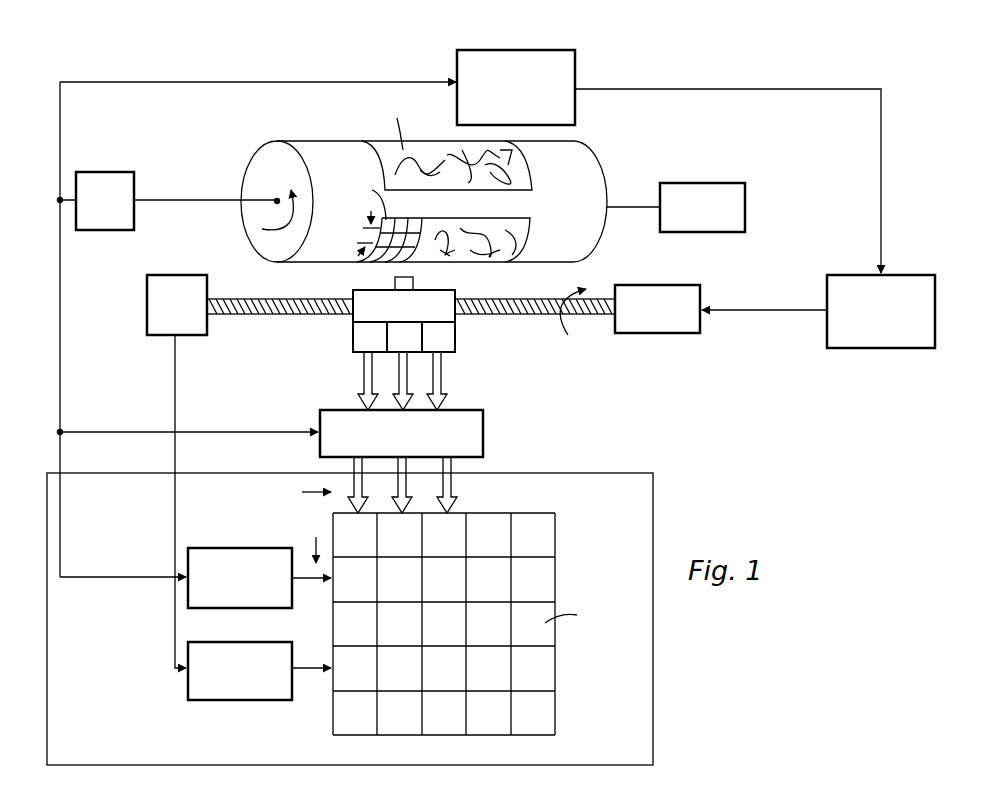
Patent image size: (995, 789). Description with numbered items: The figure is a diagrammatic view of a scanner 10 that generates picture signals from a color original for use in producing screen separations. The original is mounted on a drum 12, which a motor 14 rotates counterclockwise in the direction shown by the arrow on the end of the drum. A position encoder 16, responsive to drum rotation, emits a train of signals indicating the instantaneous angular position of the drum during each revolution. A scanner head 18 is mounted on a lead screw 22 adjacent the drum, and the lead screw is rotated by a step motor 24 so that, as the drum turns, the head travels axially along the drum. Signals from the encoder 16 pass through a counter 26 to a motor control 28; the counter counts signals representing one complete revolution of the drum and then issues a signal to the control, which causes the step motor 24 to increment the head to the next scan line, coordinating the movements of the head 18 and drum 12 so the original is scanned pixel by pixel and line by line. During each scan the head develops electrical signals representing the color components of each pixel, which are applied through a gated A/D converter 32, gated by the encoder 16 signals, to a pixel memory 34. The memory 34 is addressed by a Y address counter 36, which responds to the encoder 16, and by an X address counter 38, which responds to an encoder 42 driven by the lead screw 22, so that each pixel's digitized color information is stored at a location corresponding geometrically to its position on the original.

The scanner 10 is at (266, 56).
The drum 12 is at (335, 134).
The motor 14 is at (712, 182).
The position encoder 16 is at (107, 172).
The scanner head 18 is at (455, 334).
The lead screw 22 is at (516, 314).
The step motor 24 is at (660, 285).
The counter 26 is at (548, 50).
The motor control 28 is at (860, 273).
The gated A/D converter 32 is at (462, 410).
The pixel memory 34 is at (555, 672).
The Y address counter 36 is at (232, 548).
The X address counter 38 is at (232, 700).
The encoder 42 is at (177, 275).